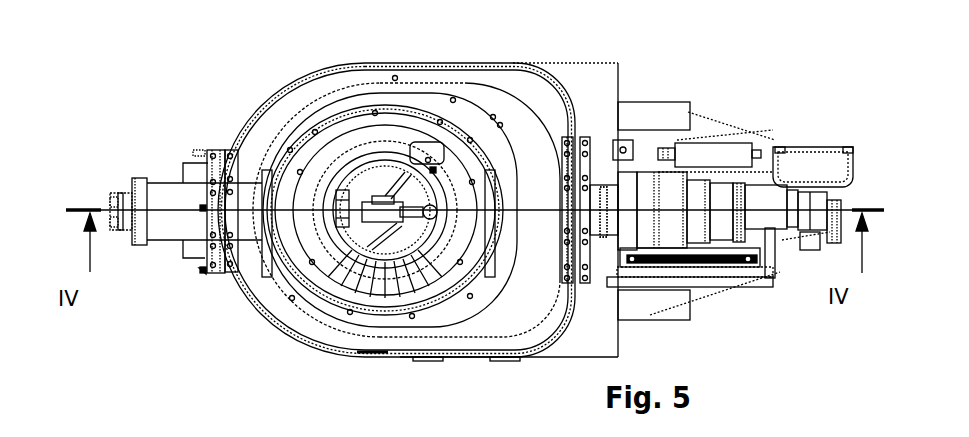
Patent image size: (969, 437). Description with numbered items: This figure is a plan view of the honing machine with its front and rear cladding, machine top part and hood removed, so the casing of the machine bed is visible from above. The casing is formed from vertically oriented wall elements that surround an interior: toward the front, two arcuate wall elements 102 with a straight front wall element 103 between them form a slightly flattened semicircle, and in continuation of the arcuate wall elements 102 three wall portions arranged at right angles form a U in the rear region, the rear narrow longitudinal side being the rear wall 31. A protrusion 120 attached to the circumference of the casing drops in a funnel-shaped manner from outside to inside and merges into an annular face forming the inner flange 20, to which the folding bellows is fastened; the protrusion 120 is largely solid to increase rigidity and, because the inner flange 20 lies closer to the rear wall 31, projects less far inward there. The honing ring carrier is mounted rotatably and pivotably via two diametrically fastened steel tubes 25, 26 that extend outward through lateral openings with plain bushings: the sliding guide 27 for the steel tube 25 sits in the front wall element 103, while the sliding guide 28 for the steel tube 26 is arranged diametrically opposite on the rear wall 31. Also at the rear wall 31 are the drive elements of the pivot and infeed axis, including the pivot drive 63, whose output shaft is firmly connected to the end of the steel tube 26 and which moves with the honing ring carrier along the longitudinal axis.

The protrusion 120 is at (510, 100).
The inner flange 20 is at (503, 147).
The steel tube 26 is at (530, 178).
The sliding guide 28 is at (593, 157).
The sliding guide 27 is at (205, 170).
The steel tube 25 is at (173, 178).
The front wall element 103 is at (205, 260).
The arcuate wall elements 102 is at (263, 330).
The rear wall 31 is at (562, 268).
The pivot drive 63 is at (715, 243).